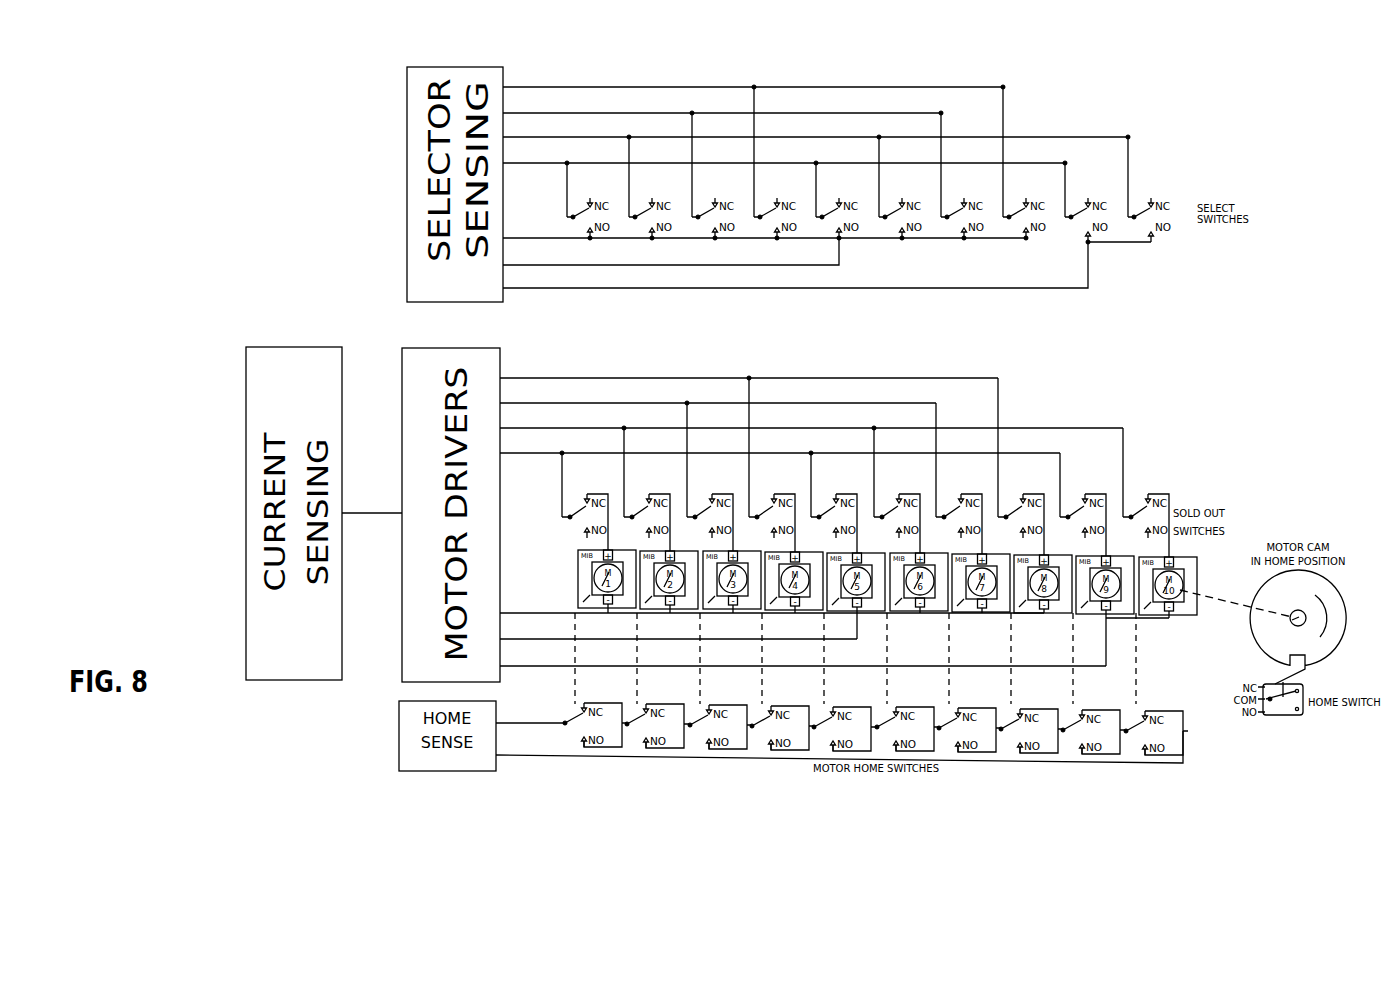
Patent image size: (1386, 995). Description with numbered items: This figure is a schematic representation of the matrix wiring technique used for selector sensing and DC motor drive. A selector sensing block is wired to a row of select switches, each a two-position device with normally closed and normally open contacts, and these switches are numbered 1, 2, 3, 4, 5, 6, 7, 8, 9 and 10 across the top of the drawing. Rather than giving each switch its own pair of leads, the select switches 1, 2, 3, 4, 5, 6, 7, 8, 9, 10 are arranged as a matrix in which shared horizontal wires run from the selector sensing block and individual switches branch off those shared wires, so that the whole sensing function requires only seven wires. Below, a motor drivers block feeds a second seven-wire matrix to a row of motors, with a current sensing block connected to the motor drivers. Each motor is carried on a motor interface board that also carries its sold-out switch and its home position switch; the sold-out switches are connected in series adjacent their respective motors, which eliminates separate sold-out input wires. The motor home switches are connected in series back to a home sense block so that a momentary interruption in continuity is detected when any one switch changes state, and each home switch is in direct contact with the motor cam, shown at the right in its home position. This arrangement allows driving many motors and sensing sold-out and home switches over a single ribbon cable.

The select switch 1 is at (587, 200).
The select switch 2 is at (649, 187).
The select switch 3 is at (712, 175).
The select switch 4 is at (774, 162).
The select switch 5 is at (836, 200).
The select switch 6 is at (899, 187).
The select switch 7 is at (961, 175).
The select switch 8 is at (1023, 162).
The select switch 9 is at (1085, 202).
The select switch 10 is at (1148, 188).